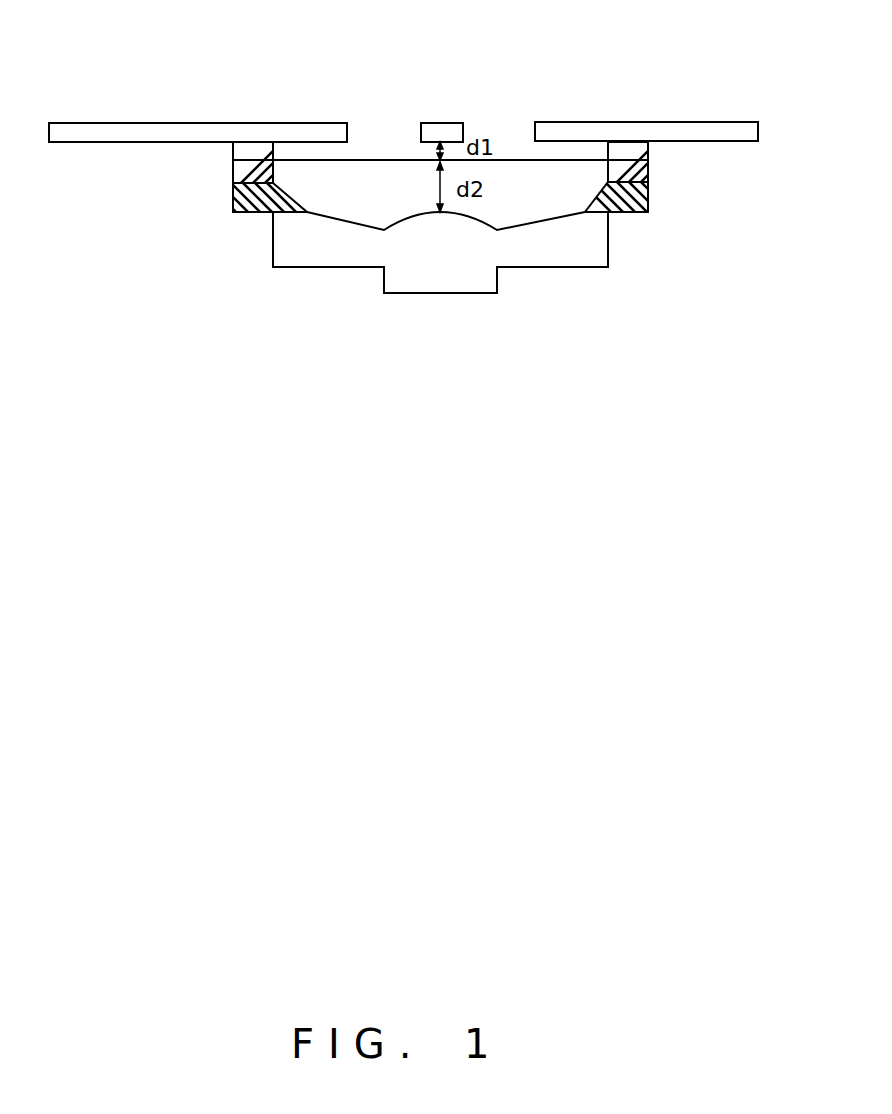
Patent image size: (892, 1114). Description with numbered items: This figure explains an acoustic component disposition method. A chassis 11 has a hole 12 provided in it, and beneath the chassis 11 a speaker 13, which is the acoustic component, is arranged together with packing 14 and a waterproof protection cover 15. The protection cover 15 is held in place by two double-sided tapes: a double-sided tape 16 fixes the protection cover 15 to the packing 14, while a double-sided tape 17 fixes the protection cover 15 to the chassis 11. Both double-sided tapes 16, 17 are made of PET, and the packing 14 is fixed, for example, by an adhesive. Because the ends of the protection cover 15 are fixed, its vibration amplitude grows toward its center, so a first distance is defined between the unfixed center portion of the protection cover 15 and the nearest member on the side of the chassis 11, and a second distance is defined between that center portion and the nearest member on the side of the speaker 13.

The chassis 11 is at (683, 122).
The hole 12 is at (480, 123).
The speaker 13 is at (608, 260).
The packing 14 is at (648, 212).
The waterproof protection cover 15 is at (396, 160).
The double-sided tape 16 is at (650, 165).
The double-sided tape 17 is at (233, 145).